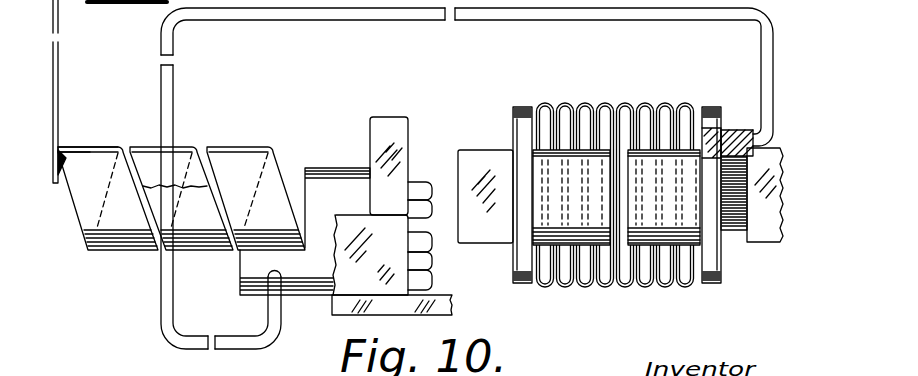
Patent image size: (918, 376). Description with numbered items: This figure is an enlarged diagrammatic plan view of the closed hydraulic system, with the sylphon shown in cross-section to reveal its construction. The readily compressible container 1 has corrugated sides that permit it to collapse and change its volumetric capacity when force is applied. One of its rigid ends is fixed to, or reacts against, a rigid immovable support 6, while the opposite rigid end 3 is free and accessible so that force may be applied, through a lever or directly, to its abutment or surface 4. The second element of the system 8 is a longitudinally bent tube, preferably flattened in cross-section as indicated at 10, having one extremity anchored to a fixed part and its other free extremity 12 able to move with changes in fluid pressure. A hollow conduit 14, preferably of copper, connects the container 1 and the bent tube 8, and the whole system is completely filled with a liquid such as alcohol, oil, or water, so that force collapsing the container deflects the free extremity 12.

The hollow conduit 14 is at (607, 10).
The free extremity of the tube 12 is at (83, 158).
The second element of the system 8 is at (118, 222).
The flattened cross-section of the tube 10 is at (209, 250).
The abutment or surface 4 is at (490, 151).
The rigid end 3 is at (518, 261).
The compressible container 1 is at (703, 106).
The rigid immovable support 6 is at (765, 232).